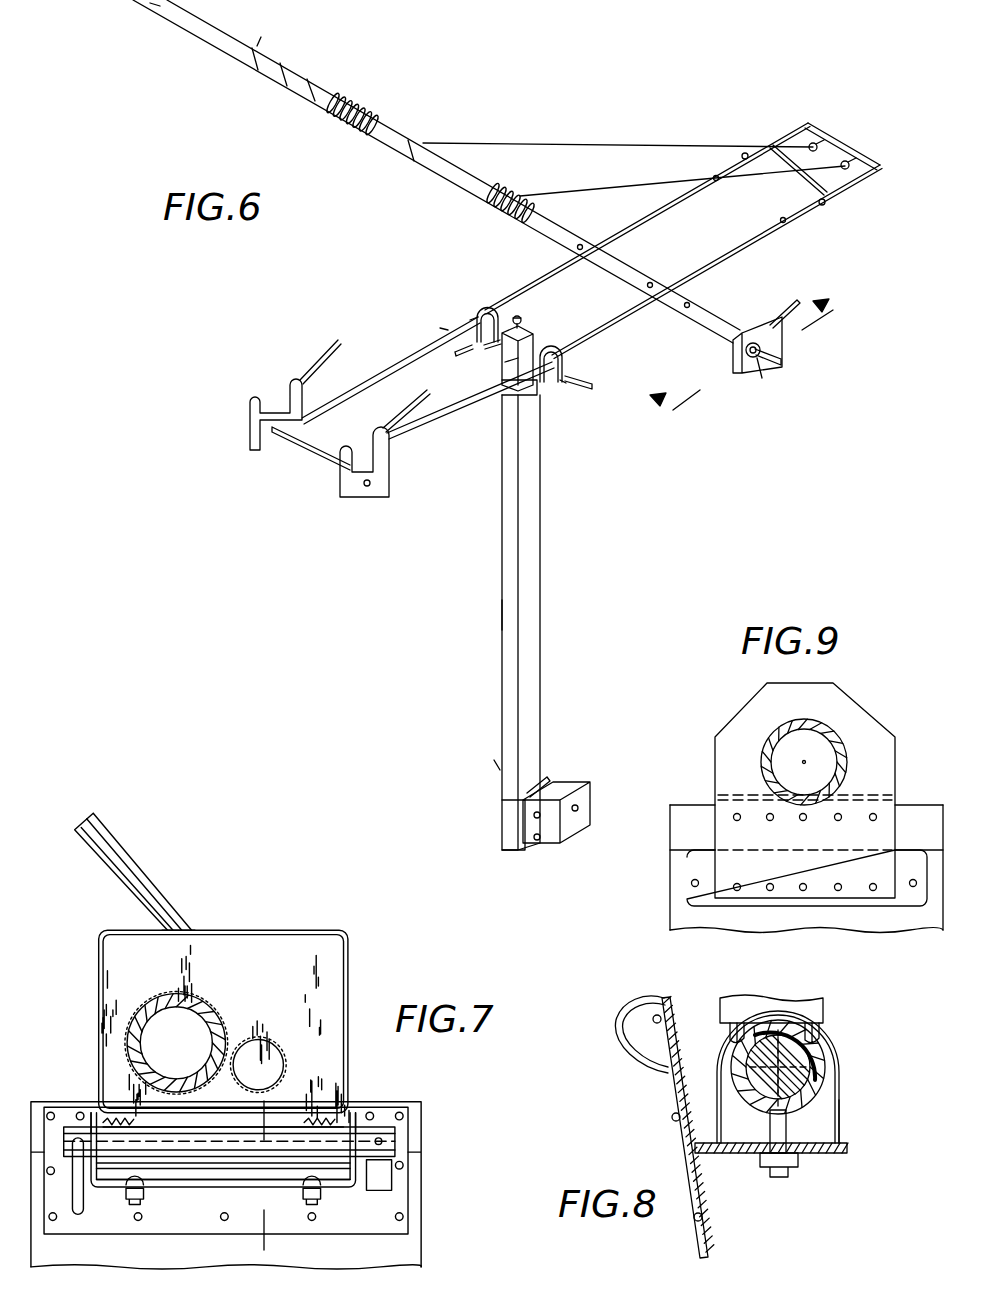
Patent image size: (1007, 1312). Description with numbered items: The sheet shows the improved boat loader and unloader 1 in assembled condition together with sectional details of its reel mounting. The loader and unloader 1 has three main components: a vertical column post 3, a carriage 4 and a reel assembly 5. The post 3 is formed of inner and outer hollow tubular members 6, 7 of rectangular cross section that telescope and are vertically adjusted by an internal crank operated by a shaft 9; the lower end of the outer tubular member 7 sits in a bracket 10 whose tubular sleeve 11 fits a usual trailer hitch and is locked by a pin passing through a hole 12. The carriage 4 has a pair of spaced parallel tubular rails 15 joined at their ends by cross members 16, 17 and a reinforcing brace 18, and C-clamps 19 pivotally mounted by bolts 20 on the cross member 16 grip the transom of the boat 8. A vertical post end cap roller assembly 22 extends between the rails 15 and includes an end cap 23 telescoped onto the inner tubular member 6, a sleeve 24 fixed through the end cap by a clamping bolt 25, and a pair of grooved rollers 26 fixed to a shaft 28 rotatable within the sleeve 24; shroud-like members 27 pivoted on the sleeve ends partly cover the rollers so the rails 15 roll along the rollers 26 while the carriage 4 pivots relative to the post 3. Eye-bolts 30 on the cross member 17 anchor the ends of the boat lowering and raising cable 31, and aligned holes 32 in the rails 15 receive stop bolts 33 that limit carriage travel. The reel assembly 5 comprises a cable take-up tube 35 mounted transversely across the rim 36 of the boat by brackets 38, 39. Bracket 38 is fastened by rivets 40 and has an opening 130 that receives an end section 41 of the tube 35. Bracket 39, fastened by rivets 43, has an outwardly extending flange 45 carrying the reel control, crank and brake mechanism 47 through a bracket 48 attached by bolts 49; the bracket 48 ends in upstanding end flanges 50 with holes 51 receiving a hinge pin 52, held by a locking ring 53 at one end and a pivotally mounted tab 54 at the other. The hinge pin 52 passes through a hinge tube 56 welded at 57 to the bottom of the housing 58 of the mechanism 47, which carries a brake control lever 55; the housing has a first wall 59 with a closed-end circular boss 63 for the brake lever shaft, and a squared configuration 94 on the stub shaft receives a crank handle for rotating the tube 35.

In FIG. 6, the boat loader and unloader 1 is at (480, 484).
In FIG. 6, the vertical column post 3 is at (553, 614).
In FIG. 6, the carriage 4 is at (445, 330).
In FIG. 6, the reel assembly 5 is at (312, 62).
In FIG. 6, the inner hollow tubular member 6 is at (536, 400).
In FIG. 6, the outer hollow tubular member 7 is at (543, 570).
In FIG. 7, the boat 8 is at (264, 1110).
In FIG. 6, the shaft 9 is at (547, 790).
In FIG. 6, the bracket 10 is at (535, 882).
In FIG. 6, the tubular sleeve 11 is at (578, 790).
In FIG. 6, the hole 12 is at (578, 812).
In FIG. 6, the tubular rails 15 is at (373, 382).
In FIG. 6, the cross member 16 is at (300, 450).
In FIG. 6, the cross member 17 is at (842, 148).
In FIG. 6, the reinforcing brace 18 is at (866, 172).
In FIG. 6, the C-clamps 19 is at (258, 443).
In FIG. 6, the bolts 20 is at (372, 486).
In FIG. 6, the vertical post end cap roller assembly 22 is at (537, 328).
In FIG. 6, the end cap 23 is at (505, 370).
In FIG. 6, the sleeve 24 is at (497, 348).
In FIG. 6, the clamping bolt 25 is at (517, 317).
In FIG. 6, the grooved rollers 26 is at (458, 352).
In FIG. 6, the shroud-like members 27 is at (486, 312).
In FIG. 6, the shaft 28 is at (594, 384).
In FIG. 6, the eye-bolts 30 is at (815, 141).
In FIG. 6, the boat lowering and raising cable 31 is at (583, 143).
In FIG. 6, the aligned holes 32 is at (717, 181).
In FIG. 6, the stop bolts 33 is at (740, 157).
In FIG. 6, the cable take-up tube 35 is at (414, 150).
In FIG. 9, the cable take-up tube 35 is at (833, 737).
In FIG. 7, the cable take-up tube 35 is at (210, 1010).
In FIG. 9, the rim 36 is at (922, 822).
In FIG. 7, the rim 36 is at (414, 1124).
In FIG. 8, the rim 36 is at (630, 1012).
In FIG. 9, the bracket 38 is at (748, 725).
In FIG. 7, the bracket 39 is at (367, 1223).
In FIG. 8, the bracket 39 is at (706, 1185).
In FIG. 9, the rivets 40 is at (770, 822).
In FIG. 6, the end section 41 is at (160, 6).
In FIG. 7, the rivets 43 is at (410, 1107).
In FIG. 8, the rivets 43 is at (667, 1012).
In FIG. 7, the outwardly extending flange 45 is at (198, 1188).
In FIG. 8, the outwardly extending flange 45 is at (815, 1154).
In FIG. 6, the reel control, crank and brake mechanism 47 is at (745, 389).
In FIG. 7, the reel control, crank and brake mechanism 47 is at (241, 926).
In FIG. 7, the bracket 48 is at (178, 1185).
In FIG. 8, the bracket 48 is at (845, 1124).
In FIG. 7, the bolts 49 is at (133, 1202).
In FIG. 8, the bolts 49 is at (784, 1178).
In FIG. 7, the upstanding end flanges 50 is at (98, 1105).
In FIG. 8, the upstanding end flanges 50 is at (836, 1103).
In FIG. 8, the holes 51 is at (801, 1060).
In FIG. 7, the hinge pin 52 is at (392, 1143).
In FIG. 8, the hinge pin 52 is at (809, 1080).
In FIG. 7, the locking ring 53 is at (80, 1218).
In FIG. 7, the pivotally mounted tab 54 is at (382, 1178).
In FIG. 8, the pivotally mounted tab 54 is at (768, 1128).
In FIG. 7, the brake control lever 55 is at (104, 840).
In FIG. 7, the hinge tube 56 is at (180, 1146).
In FIG. 8, the hinge tube 56 is at (746, 1063).
In FIG. 7, the weld 57 is at (124, 1127).
In FIG. 8, the weld 57 is at (817, 1027).
In FIG. 7, the housing 58 is at (358, 948).
In FIG. 8, the housing 58 is at (812, 995).
In FIG. 7, the first wall 59 is at (135, 950).
In FIG. 7, the closed end circular boss 63 is at (263, 1063).
In FIG. 6, the squared configuration 94 is at (783, 363).
In FIG. 9, the opening 130 is at (771, 768).